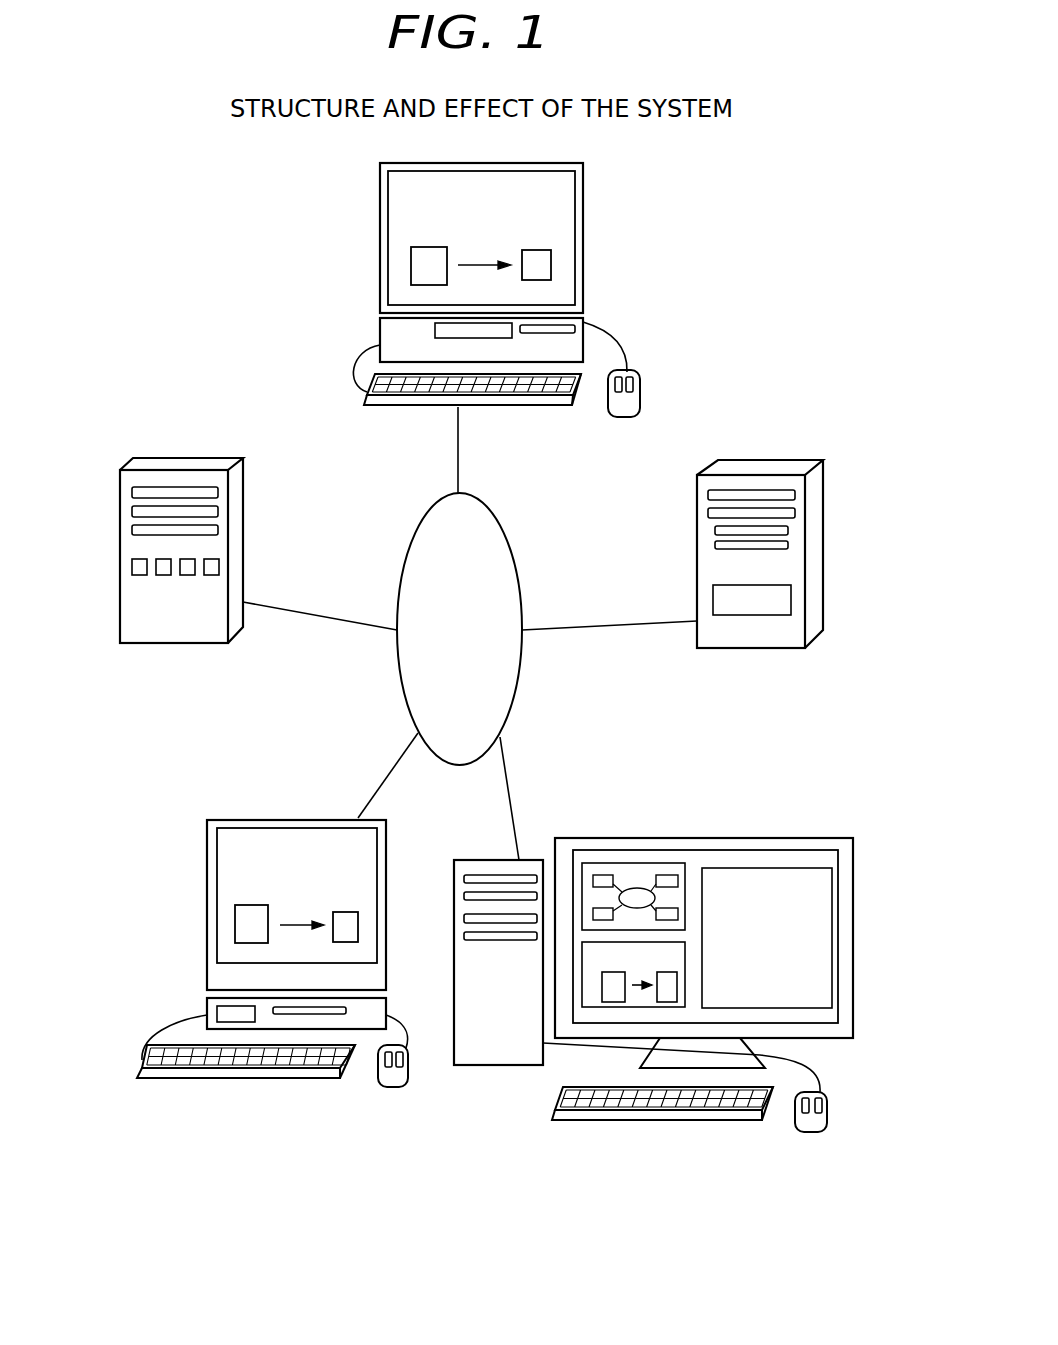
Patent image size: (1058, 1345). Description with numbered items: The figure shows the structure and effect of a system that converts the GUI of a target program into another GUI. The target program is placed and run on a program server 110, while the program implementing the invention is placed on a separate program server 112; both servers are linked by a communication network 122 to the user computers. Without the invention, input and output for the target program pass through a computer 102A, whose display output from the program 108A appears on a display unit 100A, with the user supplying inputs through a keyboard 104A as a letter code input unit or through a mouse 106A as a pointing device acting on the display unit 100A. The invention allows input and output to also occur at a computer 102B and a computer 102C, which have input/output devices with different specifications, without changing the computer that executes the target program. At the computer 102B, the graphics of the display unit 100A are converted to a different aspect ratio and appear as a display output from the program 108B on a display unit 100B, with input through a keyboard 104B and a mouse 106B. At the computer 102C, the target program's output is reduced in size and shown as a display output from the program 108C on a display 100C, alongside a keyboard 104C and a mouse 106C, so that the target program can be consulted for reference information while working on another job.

The display unit 100A is at (380, 210).
The computer 102A is at (380, 330).
The keyboard 104A is at (370, 407).
The mouse 106A is at (640, 392).
The display output from the program 108A is at (558, 220).
The program server 110 is at (210, 462).
The program server 112 is at (754, 463).
The communication network 122 is at (513, 710).
The display unit 100B is at (207, 830).
The computer 102B is at (207, 1005).
The keyboard 104B is at (243, 1082).
The mouse 106B is at (388, 1088).
The display output from the program 108B is at (220, 876).
The display 100C is at (762, 838).
The computer 102C is at (487, 1066).
The keyboard 104C is at (643, 1117).
The mouse 106C is at (808, 1133).
The display output from the program 108C is at (635, 1000).